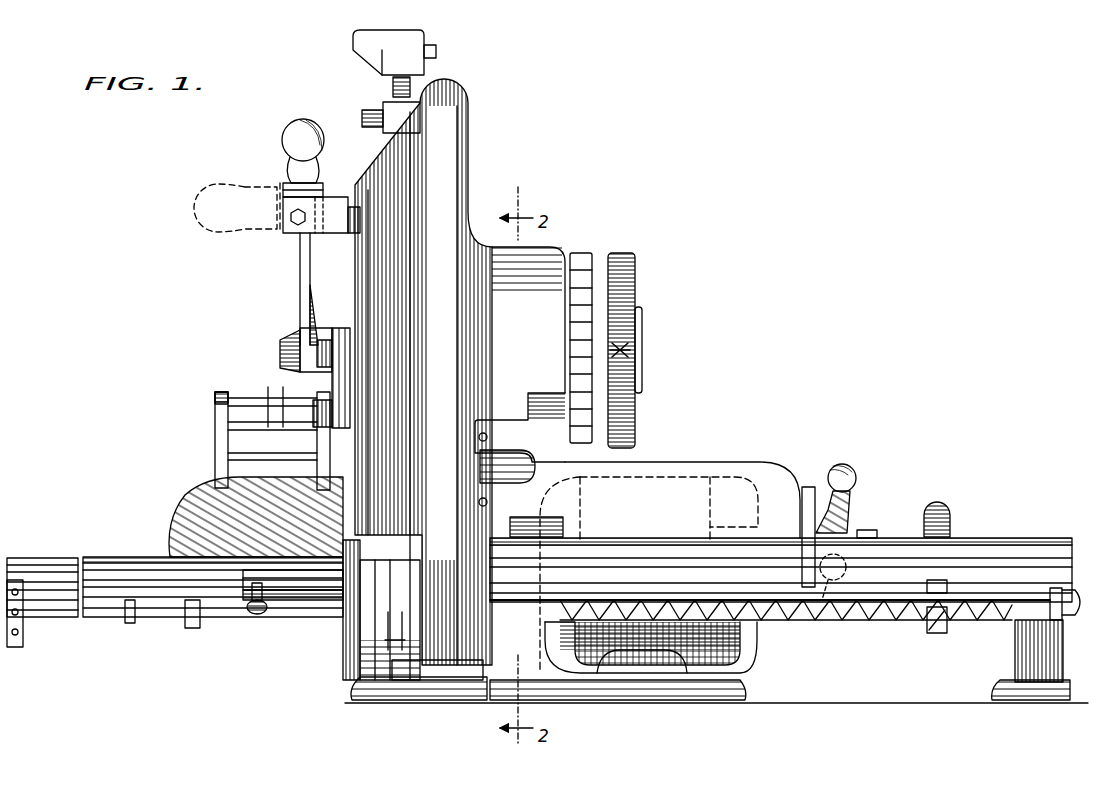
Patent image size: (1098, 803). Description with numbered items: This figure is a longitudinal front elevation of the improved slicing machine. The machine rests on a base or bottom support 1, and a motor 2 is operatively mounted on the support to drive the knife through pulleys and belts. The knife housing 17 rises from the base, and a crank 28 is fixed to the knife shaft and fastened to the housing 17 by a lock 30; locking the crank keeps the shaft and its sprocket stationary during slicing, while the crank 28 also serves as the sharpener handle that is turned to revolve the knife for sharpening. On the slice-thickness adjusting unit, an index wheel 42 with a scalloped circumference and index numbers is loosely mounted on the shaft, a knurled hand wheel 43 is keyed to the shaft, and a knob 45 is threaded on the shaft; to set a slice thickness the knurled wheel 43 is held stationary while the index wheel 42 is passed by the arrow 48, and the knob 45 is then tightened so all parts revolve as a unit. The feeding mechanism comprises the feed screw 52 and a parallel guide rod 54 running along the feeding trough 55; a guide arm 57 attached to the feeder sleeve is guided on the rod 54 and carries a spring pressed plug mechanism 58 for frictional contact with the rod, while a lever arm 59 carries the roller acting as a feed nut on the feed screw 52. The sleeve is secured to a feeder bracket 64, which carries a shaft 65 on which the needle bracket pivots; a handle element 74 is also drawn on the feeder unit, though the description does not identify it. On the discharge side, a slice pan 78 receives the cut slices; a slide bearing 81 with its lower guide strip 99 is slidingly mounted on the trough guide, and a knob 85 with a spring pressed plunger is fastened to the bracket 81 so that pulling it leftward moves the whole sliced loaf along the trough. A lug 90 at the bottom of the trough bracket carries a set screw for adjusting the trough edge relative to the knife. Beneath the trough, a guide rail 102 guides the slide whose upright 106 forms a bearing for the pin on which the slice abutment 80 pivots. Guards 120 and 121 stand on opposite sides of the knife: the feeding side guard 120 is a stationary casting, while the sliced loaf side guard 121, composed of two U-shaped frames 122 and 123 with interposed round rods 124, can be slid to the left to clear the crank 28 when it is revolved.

The base or bottom support 1 is at (375, 691).
The motor 2 is at (742, 477).
The housing 17 is at (468, 178).
The crank 28 is at (300, 268).
The lock 30 is at (337, 188).
The index wheel 42 is at (590, 252).
The knurled hand wheel 43 is at (636, 253).
The knob 45 is at (645, 379).
The arrow 48 is at (641, 340).
The feed screw 52 is at (865, 612).
The guide rod 54 is at (985, 607).
The feeding trough 55 is at (1005, 540).
The guide arm 57 is at (943, 581).
The spring pressed plug mechanism 58 is at (937, 633).
The lever arm 59 is at (938, 497).
The feeder bracket 64 is at (807, 500).
The shaft 65 is at (831, 590).
The handle 74 is at (851, 470).
The slice pan 78 is at (123, 555).
The slice abutment 80 is at (170, 555).
The slide bearing 81 is at (311, 575).
The knob 85 is at (254, 615).
The lug 90 is at (388, 622).
The lower guide strip 99 is at (285, 590).
The guide rail 102 is at (58, 617).
The upright 106 is at (188, 628).
The guard 120 is at (540, 400).
The guard 121 is at (212, 389).
The U-shaped frame 122 is at (222, 440).
The U-shaped frame 123 is at (322, 472).
The round rods 124 is at (270, 400).